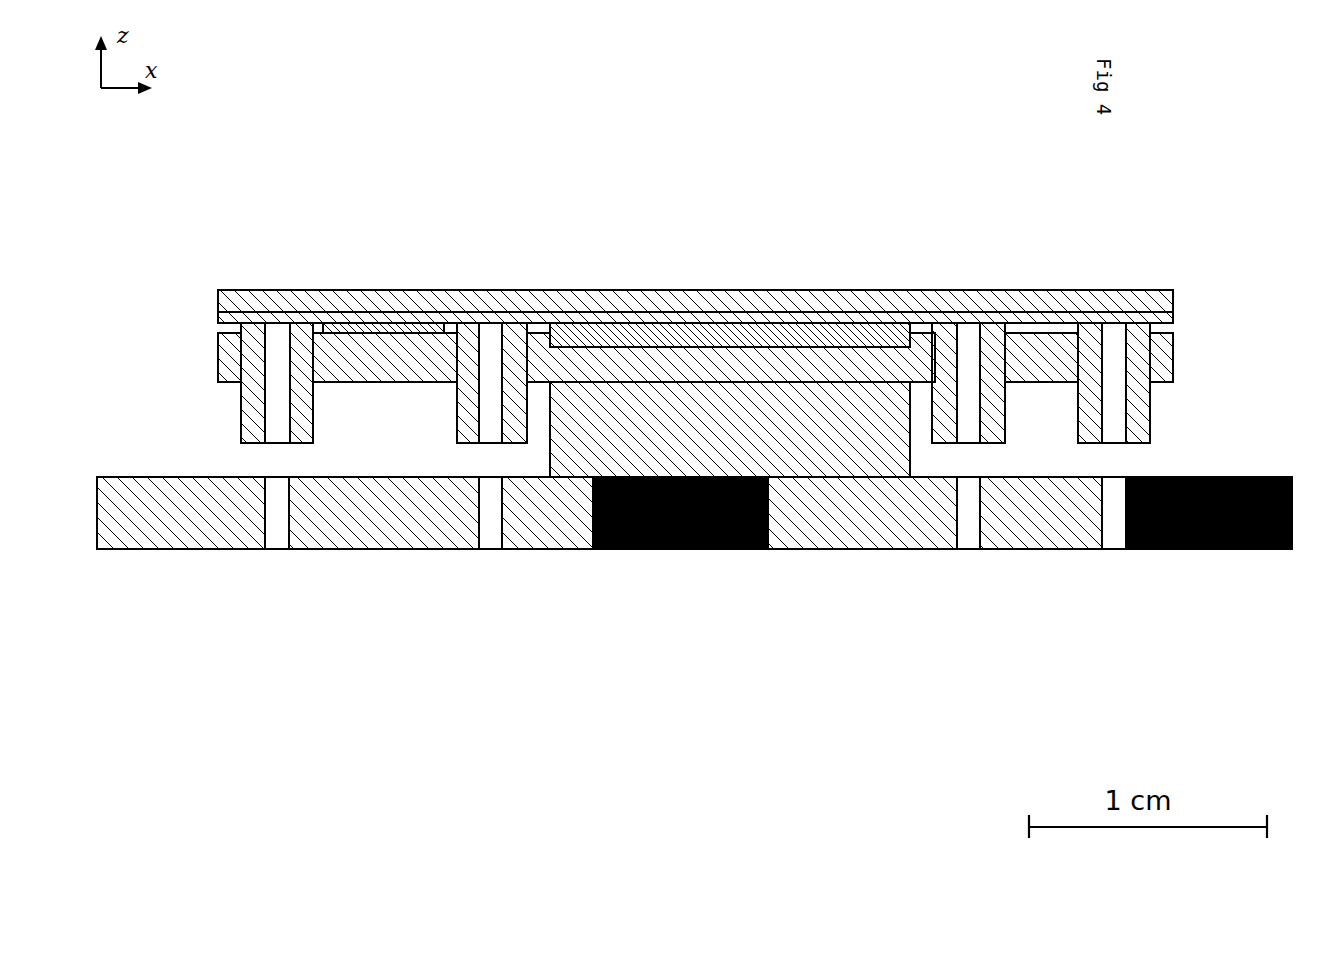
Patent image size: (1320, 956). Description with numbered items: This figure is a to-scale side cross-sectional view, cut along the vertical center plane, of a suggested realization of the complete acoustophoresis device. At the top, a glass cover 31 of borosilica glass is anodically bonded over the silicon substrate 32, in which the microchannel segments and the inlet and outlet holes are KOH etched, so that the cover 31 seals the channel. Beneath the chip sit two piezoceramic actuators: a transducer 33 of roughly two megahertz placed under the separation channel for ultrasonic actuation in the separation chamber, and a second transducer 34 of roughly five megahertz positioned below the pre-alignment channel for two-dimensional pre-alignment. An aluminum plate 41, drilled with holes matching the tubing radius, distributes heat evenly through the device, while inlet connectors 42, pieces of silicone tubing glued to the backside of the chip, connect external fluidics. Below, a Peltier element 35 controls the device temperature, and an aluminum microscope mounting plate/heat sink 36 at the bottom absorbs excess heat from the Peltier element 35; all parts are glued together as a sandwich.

The glass cover 31 is at (353, 300).
The silicon substrate 32 is at (220, 318).
The transducer 33 is at (870, 337).
The second transducer 34 is at (400, 325).
The Peltier element 35 is at (705, 549).
The aluminum microscope mounting plate/heat sink 36 is at (819, 516).
The aluminum plate 41 is at (223, 358).
The inlet connectors 42 is at (303, 420).